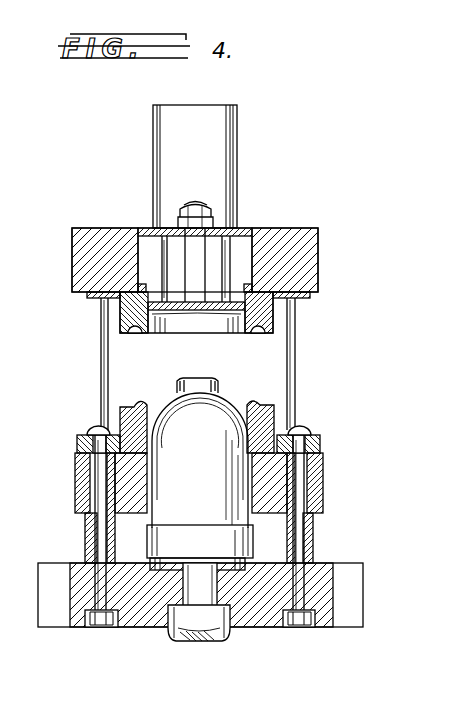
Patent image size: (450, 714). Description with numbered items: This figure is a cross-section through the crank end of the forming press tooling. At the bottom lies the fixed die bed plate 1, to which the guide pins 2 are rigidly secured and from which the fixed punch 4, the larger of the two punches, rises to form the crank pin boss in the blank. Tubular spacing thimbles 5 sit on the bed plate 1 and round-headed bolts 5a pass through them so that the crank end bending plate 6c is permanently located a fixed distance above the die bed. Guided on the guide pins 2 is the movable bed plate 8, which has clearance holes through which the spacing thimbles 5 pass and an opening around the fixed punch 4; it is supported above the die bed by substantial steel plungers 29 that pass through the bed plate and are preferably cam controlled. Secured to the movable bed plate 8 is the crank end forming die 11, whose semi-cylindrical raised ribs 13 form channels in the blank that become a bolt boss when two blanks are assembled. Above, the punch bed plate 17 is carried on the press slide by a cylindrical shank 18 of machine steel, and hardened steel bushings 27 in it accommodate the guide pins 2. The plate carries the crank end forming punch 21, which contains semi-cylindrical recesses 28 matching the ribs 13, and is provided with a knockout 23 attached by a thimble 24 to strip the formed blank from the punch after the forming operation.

The bed plate 1 is at (140, 608).
The guide pins 2 is at (100, 350).
The punch 4 is at (200, 474).
The tubular members or thimbles 5 is at (86, 525).
The round-headed bolts 5a is at (326, 415).
The bending plate, crank end 6c is at (348, 431).
The movable bed plate 8 is at (136, 506).
The forming die for the crank end 11 is at (214, 455).
The semi-cylindrical raised portions 13 is at (143, 402).
The bed plate of a movable punch 17 is at (282, 237).
The cylindrical shank 18 is at (195, 166).
The crank end punch 21 is at (278, 322).
The knockout 23 is at (181, 243).
The thimble 24 is at (235, 292).
The hardened steel bushings 27 is at (88, 297).
The semi-cylindrical recesses 28 is at (256, 338).
The steel plungers 29 is at (200, 631).